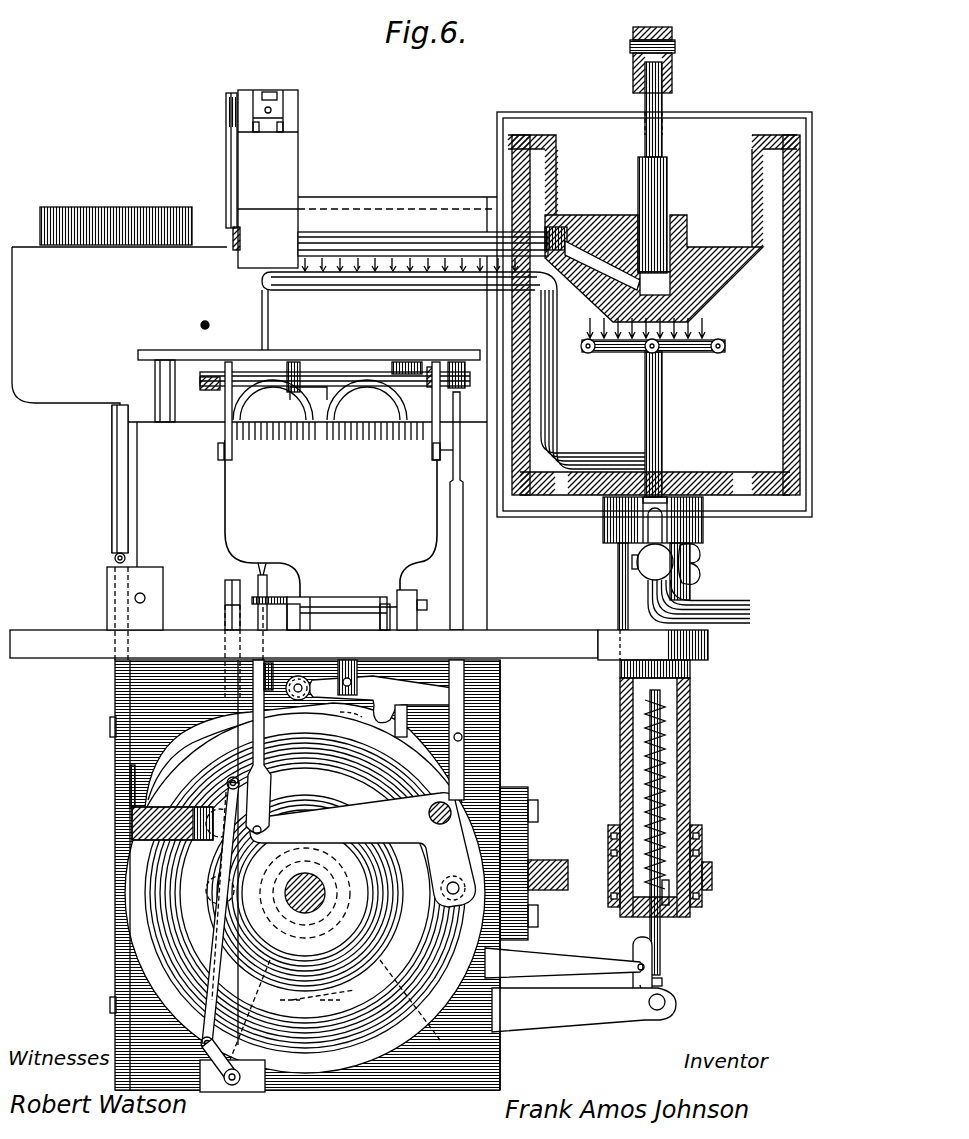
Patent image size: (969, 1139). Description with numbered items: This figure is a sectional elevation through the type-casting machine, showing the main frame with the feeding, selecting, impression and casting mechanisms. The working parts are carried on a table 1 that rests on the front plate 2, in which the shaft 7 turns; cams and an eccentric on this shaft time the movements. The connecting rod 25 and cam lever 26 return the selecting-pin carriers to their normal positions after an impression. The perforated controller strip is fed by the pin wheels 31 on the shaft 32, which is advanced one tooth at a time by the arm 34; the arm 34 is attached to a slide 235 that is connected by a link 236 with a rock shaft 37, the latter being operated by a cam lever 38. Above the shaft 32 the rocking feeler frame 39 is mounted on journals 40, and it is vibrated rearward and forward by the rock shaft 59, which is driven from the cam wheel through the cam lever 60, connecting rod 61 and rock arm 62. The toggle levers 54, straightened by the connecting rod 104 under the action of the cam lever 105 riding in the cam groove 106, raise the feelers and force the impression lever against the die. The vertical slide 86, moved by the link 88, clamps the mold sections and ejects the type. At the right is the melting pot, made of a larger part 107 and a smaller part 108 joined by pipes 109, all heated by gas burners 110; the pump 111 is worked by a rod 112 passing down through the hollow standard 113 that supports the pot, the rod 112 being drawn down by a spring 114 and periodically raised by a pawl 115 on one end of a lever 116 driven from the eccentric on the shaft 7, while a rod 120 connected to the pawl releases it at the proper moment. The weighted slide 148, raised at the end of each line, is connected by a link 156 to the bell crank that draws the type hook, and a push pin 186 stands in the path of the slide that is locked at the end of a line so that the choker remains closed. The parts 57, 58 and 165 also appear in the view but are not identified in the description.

The table 1 is at (304, 644).
The front plate 2 is at (305, 875).
The shaft 7 is at (318, 897).
The connecting rod 25 is at (406, 737).
The cam lever 26 is at (303, 755).
The pin wheels 31 is at (383, 607).
The shaft 32 is at (273, 608).
The arm 34 is at (240, 592).
The rock shaft 37 is at (237, 1087).
The cam lever 38 is at (233, 990).
The rocking frame 39 is at (253, 948).
The journals 40 is at (408, 612).
The toggle levers 54 is at (270, 667).
The guide lug 57 is at (218, 458).
The upright post 58 is at (224, 408).
The rock shaft 59 is at (360, 372).
The cam lever 60 is at (374, 691).
The connecting rod 61 is at (463, 577).
The rock arm 62 is at (456, 362).
The vertical slide 86 is at (492, 712).
The link 88 is at (490, 768).
The connecting rod 104 is at (258, 724).
The cam lever 105 is at (362, 850).
The cam groove 106 is at (445, 941).
The larger part of melting pot 107 is at (654, 314).
The smaller part of melting pot 108 is at (262, 179).
The pipes 109 is at (395, 232).
The gas burners 110 is at (733, 335).
The pump 111 is at (640, 197).
The rod 112 is at (665, 951).
The hollow standard 113 is at (692, 713).
The spring 114 is at (665, 752).
The pawl 115 is at (668, 978).
The lever 116 is at (584, 1010).
The rod 120 is at (562, 958).
The weighted slide 148 is at (113, 598).
The link 156 is at (114, 512).
The ribbed bar 165 is at (116, 242).
The push pin 186 is at (201, 325).
The slide 235 is at (222, 743).
The link 236 is at (207, 1012).